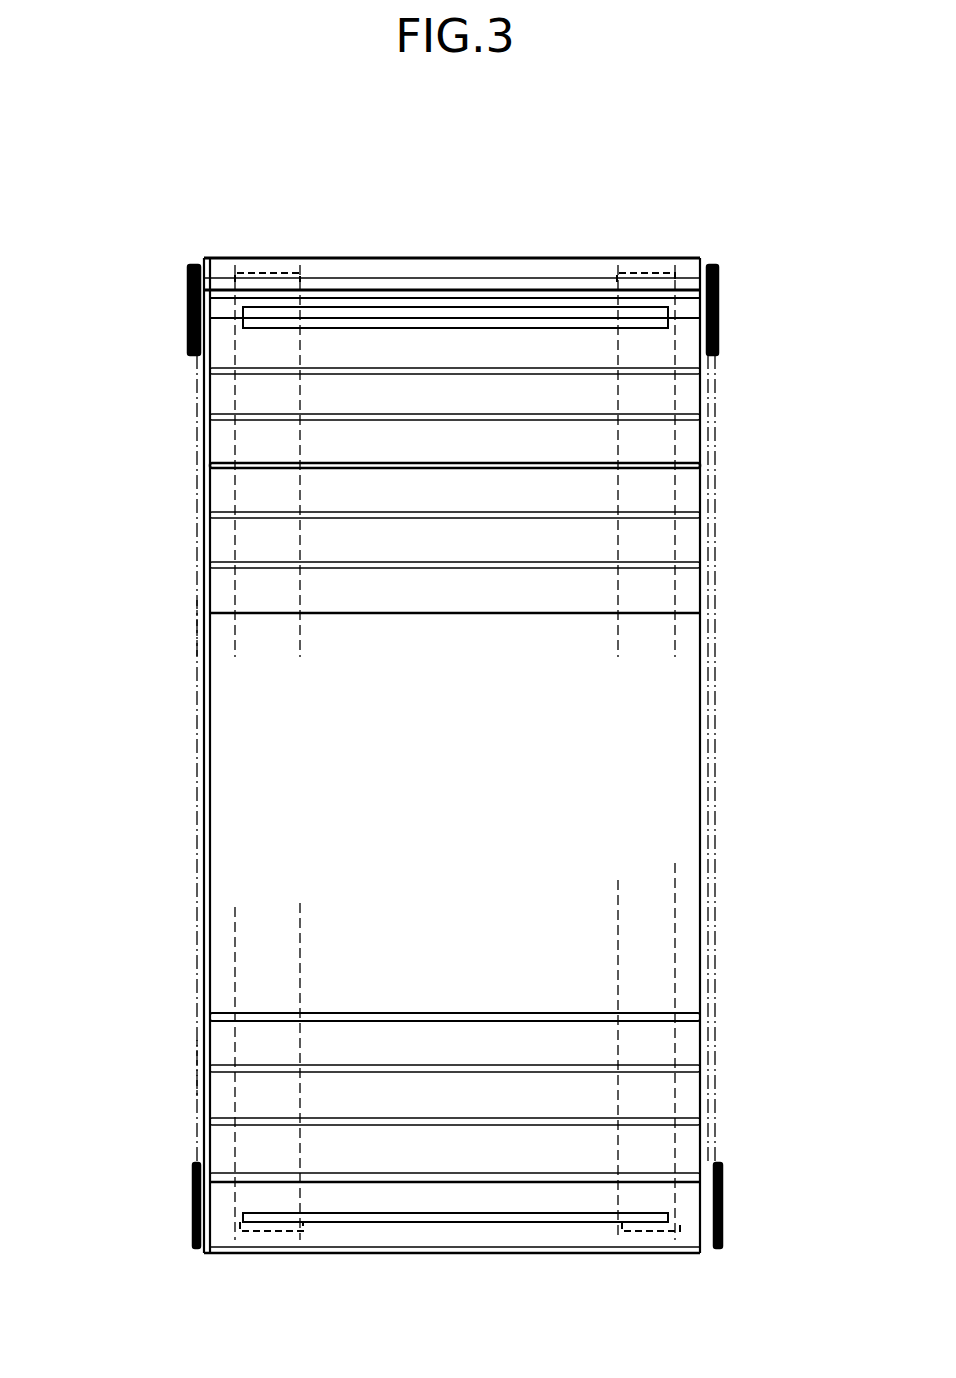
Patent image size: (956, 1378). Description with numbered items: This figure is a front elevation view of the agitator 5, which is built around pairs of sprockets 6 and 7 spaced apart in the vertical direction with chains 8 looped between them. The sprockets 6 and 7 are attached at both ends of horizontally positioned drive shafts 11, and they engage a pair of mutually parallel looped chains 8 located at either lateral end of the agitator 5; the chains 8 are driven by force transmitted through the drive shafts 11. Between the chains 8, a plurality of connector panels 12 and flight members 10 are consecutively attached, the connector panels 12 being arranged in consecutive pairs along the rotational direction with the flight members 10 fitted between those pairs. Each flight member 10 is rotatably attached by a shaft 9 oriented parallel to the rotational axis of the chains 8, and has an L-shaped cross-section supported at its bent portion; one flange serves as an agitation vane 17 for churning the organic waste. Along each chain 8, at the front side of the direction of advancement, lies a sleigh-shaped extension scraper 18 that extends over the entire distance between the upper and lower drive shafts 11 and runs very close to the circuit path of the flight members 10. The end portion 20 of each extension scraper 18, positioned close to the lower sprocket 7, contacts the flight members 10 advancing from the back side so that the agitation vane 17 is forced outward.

The agitator 5 is at (440, 258).
The sprocket 6 is at (187, 277).
The sprocket 7 is at (194, 1240).
The chain 8 is at (200, 580).
The shaft 9 is at (193, 612).
The flight member 10 is at (277, 618).
The drive shaft 11 is at (720, 305).
The connector panel 12 is at (200, 493).
The agitation vane 17 is at (408, 605).
The extension scraper 18 is at (292, 980).
The end portion 20 is at (243, 1232).